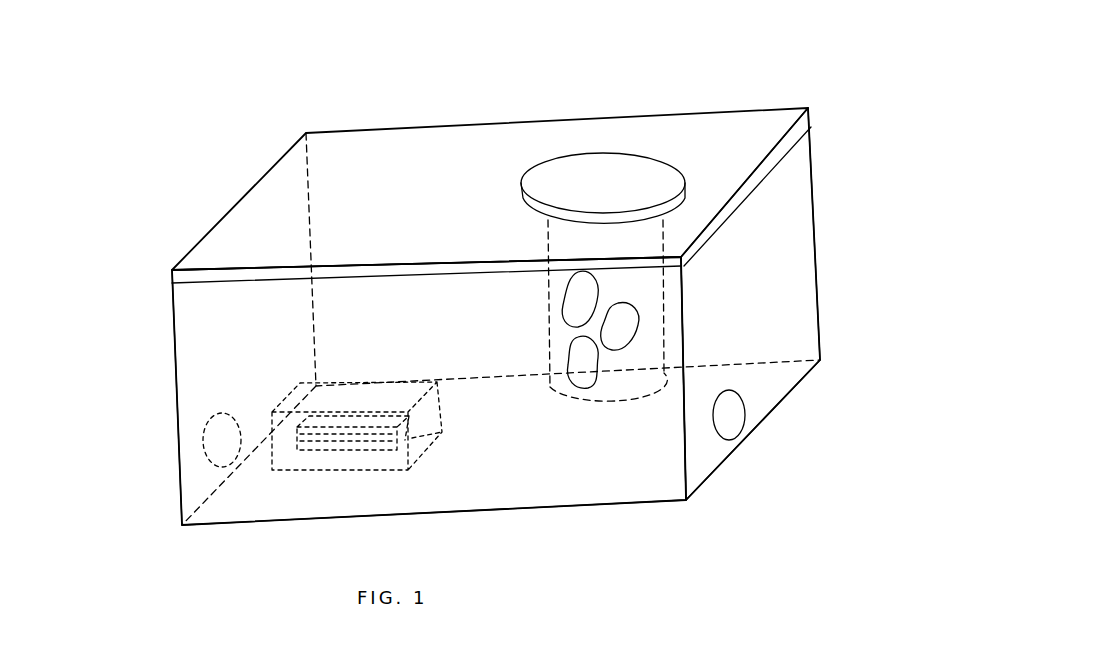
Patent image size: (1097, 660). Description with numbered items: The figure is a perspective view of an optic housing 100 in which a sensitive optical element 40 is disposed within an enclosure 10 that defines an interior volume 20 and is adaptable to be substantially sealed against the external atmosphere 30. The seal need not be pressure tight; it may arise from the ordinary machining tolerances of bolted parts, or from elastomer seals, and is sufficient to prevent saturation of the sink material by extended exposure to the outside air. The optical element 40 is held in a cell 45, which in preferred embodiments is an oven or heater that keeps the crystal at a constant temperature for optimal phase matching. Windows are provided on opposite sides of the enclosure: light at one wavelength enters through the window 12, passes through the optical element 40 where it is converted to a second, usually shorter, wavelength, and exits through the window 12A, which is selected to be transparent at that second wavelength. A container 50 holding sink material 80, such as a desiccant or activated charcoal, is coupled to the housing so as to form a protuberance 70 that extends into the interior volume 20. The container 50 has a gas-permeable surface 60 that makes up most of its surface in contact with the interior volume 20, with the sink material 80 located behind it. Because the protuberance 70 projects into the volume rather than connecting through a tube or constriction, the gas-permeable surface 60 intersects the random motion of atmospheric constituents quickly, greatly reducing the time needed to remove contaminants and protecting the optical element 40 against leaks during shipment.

The optic housing 100 is at (787, 43).
The enclosure 10 is at (173, 338).
The window 12 is at (745, 412).
The window 12A is at (203, 433).
The interior volume 20 is at (429, 391).
The external atmosphere 30 is at (880, 198).
The optical element 40 is at (348, 448).
The cell 45 is at (433, 417).
The container 50 is at (630, 190).
The gas-permeable surface 60 is at (552, 315).
The protuberance 70 is at (643, 290).
The sink material 80 is at (623, 322).